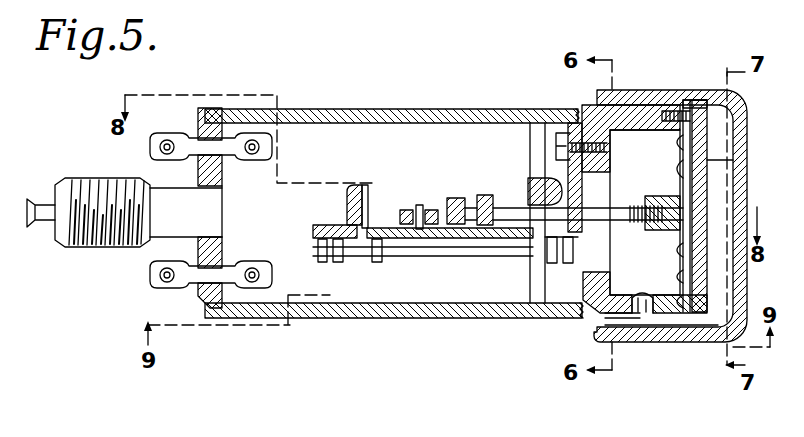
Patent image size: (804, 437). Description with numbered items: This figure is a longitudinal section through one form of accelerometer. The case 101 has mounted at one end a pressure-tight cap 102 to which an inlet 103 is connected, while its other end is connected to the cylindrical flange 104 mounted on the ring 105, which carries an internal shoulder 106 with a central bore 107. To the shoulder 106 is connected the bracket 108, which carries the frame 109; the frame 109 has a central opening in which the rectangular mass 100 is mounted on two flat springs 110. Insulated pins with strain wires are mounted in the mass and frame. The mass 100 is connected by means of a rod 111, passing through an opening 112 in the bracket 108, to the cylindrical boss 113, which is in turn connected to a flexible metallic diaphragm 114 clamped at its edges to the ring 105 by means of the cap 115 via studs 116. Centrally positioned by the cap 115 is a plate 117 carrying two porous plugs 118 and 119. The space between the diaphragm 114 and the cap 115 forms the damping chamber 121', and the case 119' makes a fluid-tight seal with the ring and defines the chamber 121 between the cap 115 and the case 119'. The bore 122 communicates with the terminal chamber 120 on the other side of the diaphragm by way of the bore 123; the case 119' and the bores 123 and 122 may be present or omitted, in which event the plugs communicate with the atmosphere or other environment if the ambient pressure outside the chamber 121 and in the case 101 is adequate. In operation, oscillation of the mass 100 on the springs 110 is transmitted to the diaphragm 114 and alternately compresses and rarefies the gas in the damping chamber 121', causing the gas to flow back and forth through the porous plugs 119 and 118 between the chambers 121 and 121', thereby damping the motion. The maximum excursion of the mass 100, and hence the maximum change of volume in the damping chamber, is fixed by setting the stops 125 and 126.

The rectangular mass 100 is at (482, 240).
The case 101 is at (383, 109).
The pressure-tight cap 102 is at (198, 172).
The inlet 103 is at (97, 180).
The cylindrical flange 104 is at (540, 108).
The ring 105 is at (632, 110).
The internal shoulder 106 is at (603, 165).
The central bore 107 is at (601, 259).
The bracket 108 is at (531, 178).
The frame 109 is at (325, 227).
The flat springs 110 is at (345, 240).
The rod 111 is at (440, 210).
The opening 112 is at (537, 214).
The cylindrical boss 113 is at (658, 196).
The flexible metallic diaphragm 114 is at (700, 158).
The cap 115 is at (712, 170).
The studs 116 is at (708, 114).
The plate 117 is at (713, 187).
The porous plug 118 is at (713, 212).
The porous plug 119 is at (689, 209).
The case 119' is at (728, 289).
The terminal chamber 120 is at (590, 318).
The chamber 121 is at (670, 253).
The damping chamber 121' is at (670, 177).
The bore 122 is at (640, 315).
The bore 123 is at (703, 300).
The stop 125 is at (398, 214).
The stop 126 is at (410, 212).